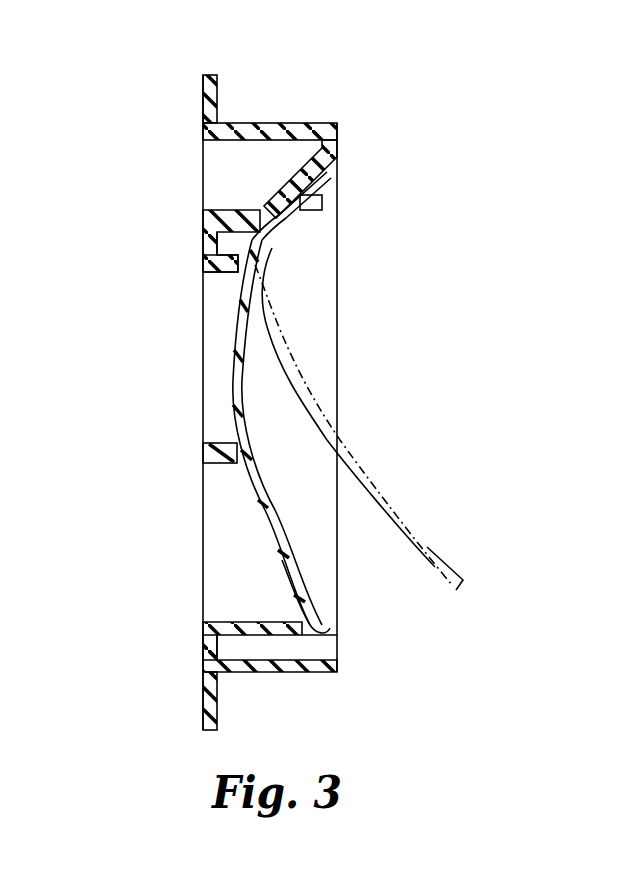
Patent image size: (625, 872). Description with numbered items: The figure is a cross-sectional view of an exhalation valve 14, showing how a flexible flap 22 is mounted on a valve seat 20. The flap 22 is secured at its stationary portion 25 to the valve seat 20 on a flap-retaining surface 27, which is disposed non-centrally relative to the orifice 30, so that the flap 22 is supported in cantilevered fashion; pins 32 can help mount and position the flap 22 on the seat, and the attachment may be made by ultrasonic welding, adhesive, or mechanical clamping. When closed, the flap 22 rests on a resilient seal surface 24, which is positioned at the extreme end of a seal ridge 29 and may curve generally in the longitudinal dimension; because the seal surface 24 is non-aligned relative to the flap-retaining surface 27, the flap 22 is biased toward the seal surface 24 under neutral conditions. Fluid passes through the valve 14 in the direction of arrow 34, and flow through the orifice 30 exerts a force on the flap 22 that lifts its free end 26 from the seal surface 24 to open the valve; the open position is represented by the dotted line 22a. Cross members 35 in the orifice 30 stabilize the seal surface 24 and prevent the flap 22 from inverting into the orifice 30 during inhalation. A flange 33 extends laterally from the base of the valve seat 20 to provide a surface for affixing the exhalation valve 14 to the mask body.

The exhalation valve 14 is at (422, 134).
The valve seat 20 is at (330, 115).
The flexible flap 22 is at (262, 487).
The dotted line 22a is at (425, 538).
The seal surface 24 is at (255, 262).
The stationary portion 25 is at (290, 226).
The free end 26 is at (300, 590).
The flap-retaining surface 27 is at (347, 168).
The seal ridge 29 is at (222, 238).
The orifice 30 is at (210, 280).
The pins 32 is at (325, 202).
The flange 33 is at (212, 96).
The arrow 34 is at (150, 490).
The cross members 35 is at (219, 465).